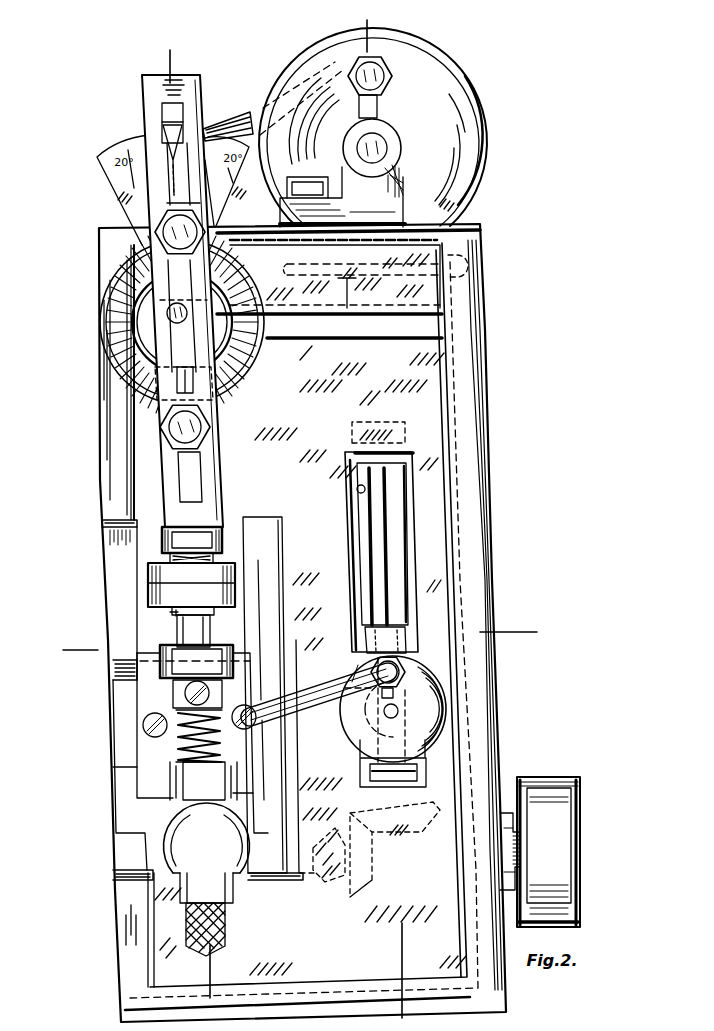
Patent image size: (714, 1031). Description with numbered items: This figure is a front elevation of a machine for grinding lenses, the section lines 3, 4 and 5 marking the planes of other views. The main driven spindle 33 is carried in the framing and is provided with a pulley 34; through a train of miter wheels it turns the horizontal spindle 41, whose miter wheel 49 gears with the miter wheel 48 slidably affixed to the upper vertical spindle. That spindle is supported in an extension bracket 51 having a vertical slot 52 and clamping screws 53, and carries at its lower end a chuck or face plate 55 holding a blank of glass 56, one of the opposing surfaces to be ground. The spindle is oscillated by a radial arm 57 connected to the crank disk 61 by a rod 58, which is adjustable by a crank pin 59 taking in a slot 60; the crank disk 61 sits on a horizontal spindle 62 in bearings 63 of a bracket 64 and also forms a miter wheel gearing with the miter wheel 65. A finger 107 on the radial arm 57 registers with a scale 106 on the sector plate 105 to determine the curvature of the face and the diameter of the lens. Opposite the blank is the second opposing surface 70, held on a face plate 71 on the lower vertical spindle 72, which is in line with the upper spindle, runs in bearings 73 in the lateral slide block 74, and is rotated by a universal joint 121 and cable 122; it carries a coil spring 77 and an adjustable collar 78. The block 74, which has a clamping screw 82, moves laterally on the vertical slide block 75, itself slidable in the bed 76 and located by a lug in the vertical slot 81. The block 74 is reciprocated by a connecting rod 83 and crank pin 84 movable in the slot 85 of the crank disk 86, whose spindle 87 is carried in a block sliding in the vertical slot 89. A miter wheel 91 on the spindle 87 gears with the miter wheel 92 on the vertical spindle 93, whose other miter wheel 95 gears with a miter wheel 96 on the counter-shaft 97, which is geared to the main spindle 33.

The section line 3- 3 is at (199, 524).
The section line 4- 4 is at (387, 509).
The section line 5- 5 is at (300, 630).
The main driven spindle 33 is at (513, 850).
The pulley 34 is at (548, 852).
The horizontal spindle 41 is at (177, 315).
The miter wheel 48 is at (195, 382).
The miter wheel 49 is at (235, 365).
The extension bracket 51 is at (182, 301).
The vertical slot 52 is at (192, 484).
The clamping screws 53 is at (203, 426).
The chuck or face plate 55 is at (185, 562).
The blank of glass 56 is at (191, 585).
The radial arm 57 is at (218, 211).
The rod 58 is at (244, 122).
The crank pin 59 is at (378, 72).
The slot 60 is at (379, 104).
The crank disk 61 is at (373, 127).
The horizontal spindle 62 is at (357, 147).
The bearings 63 is at (402, 141).
The bracket 64 is at (342, 196).
The miter wheel 65 is at (460, 262).
The second opposing surface 70 is at (193, 601).
The face plate 71 is at (170, 614).
The vertical spindle 72 is at (194, 632).
The bearings 73 is at (203, 781).
The block 74 is at (244, 732).
The block 75 is at (120, 703).
The bed 76 is at (272, 538).
The coil spring 77 is at (178, 743).
The adjustable collar 78 is at (184, 691).
The vertical slot 81 is at (168, 641).
The clamping screw 82 is at (143, 726).
The connecting rod 83 is at (333, 679).
The crank pin 84 is at (367, 651).
The slot 85 is at (405, 670).
The crank disk 86 is at (447, 713).
The spindle 87 is at (386, 715).
The vertical slot 89 is at (357, 490).
The miter wheel 91 is at (421, 778).
The miter wheel 92 is at (355, 680).
The vertical spindle 93 is at (380, 517).
The miter wheel 95 is at (422, 830).
The miter wheel 96 is at (374, 853).
The counter-shaft 97 is at (321, 865).
The sector plate 105 is at (133, 192).
The scale 106 is at (137, 139).
The finger 107 is at (168, 110).
The universal joint 121 is at (206, 853).
The cable 122 is at (226, 927).